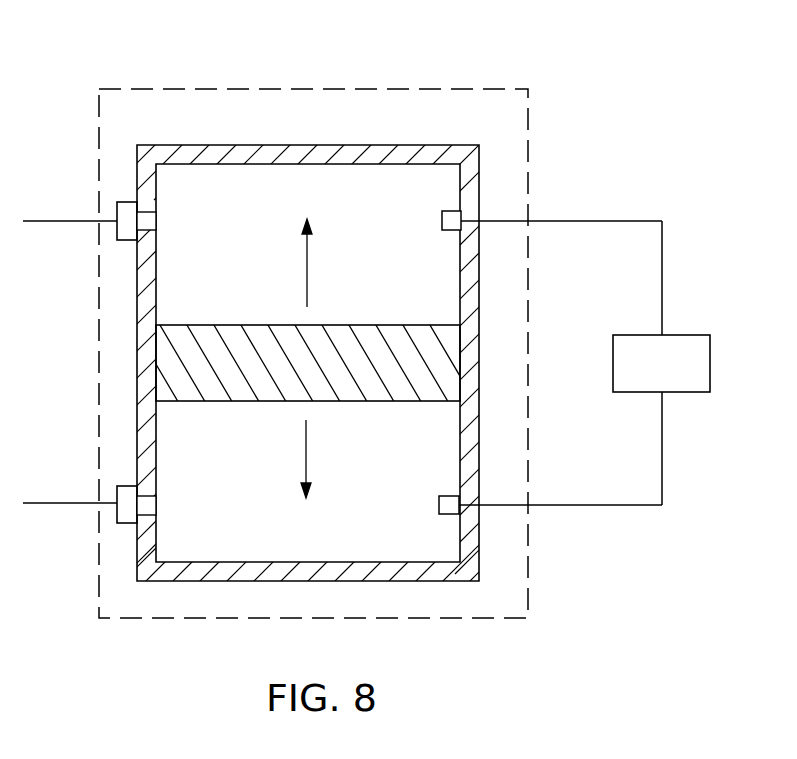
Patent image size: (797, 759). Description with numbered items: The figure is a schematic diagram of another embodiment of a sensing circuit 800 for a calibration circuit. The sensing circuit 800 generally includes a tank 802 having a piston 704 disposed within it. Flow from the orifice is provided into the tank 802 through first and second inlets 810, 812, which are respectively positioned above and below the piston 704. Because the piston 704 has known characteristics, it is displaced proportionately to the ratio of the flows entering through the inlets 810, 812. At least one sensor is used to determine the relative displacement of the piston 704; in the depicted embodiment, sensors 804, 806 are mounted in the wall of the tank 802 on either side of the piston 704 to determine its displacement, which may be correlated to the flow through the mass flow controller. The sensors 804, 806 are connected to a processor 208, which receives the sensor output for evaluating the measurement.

The sensing circuit 800 is at (448, 90).
The tank 802 is at (333, 145).
The piston 704 is at (393, 394).
The sensor 804 is at (441, 224).
The sensor 806 is at (438, 505).
The first inlet 810 is at (146, 218).
The second inlet 812 is at (146, 503).
The processor 208 is at (640, 380).